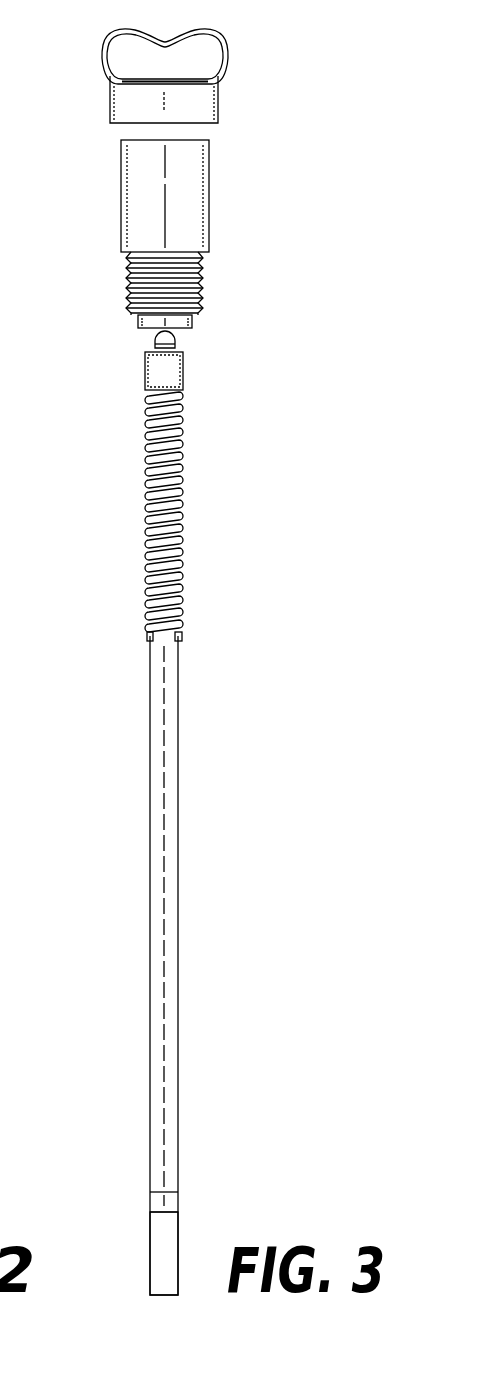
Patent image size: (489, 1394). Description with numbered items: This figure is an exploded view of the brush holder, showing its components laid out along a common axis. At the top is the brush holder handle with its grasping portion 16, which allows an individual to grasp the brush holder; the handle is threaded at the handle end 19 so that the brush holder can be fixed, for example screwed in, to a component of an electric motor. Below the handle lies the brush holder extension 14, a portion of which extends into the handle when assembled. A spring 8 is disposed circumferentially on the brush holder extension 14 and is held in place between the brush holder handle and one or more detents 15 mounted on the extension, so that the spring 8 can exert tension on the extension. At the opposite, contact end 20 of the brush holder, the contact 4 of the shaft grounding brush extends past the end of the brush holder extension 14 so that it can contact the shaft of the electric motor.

The grasping portion 16 is at (228, 52).
The handle end 19 is at (88, 189).
The spring 8 is at (182, 487).
The detents 15 is at (147, 636).
The brush holder extension 14 is at (178, 805).
The contact end 20 is at (212, 1157).
The contact 4 is at (165, 1258).